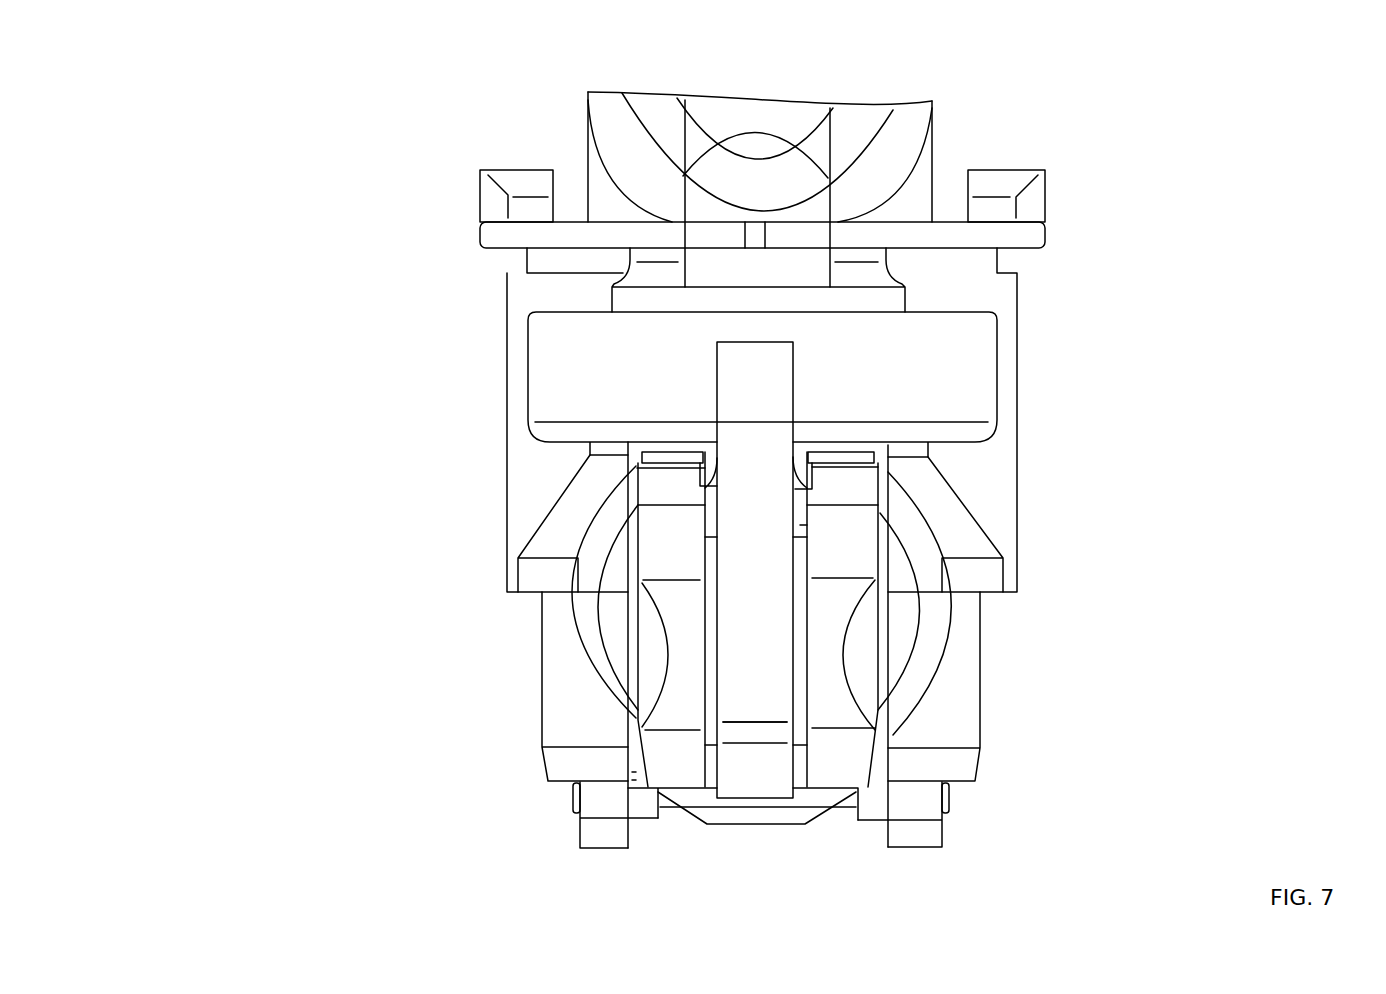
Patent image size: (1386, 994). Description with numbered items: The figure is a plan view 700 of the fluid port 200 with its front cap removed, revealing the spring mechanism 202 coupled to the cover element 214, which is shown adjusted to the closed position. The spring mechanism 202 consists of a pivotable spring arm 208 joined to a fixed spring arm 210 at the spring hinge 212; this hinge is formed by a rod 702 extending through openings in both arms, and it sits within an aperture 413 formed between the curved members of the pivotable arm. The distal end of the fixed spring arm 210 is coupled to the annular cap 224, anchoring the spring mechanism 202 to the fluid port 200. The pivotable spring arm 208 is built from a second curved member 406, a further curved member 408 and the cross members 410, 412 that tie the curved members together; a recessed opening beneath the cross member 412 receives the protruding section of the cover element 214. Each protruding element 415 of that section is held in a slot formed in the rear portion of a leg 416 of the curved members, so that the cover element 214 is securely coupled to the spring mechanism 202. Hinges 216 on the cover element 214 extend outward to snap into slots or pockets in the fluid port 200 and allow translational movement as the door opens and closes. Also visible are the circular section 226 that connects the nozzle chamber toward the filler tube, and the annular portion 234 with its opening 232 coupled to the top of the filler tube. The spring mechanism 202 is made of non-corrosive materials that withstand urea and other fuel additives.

The plan view 700 is at (122, 106).
The fluid port 200 is at (1032, 345).
The spring mechanism 202 is at (804, 366).
The pivotable spring arm 208 is at (668, 765).
The fixed spring arm 210 is at (730, 398).
The spring hinge 212 is at (755, 772).
The cover element 214 is at (903, 700).
The hinge 216 is at (935, 803).
The annular cap 224 is at (553, 365).
The circular section 226 is at (1036, 233).
The opening 232 is at (757, 116).
The annular portion 234 is at (858, 118).
The second curved member 406 is at (830, 648).
The second curved member 408 is at (652, 567).
The cross member 410 is at (798, 812).
The cross member 412 is at (800, 527).
The aperture 413 is at (712, 613).
The protruding element 415 is at (843, 493).
The leg 416 is at (677, 458).
The rod 702 is at (800, 772).